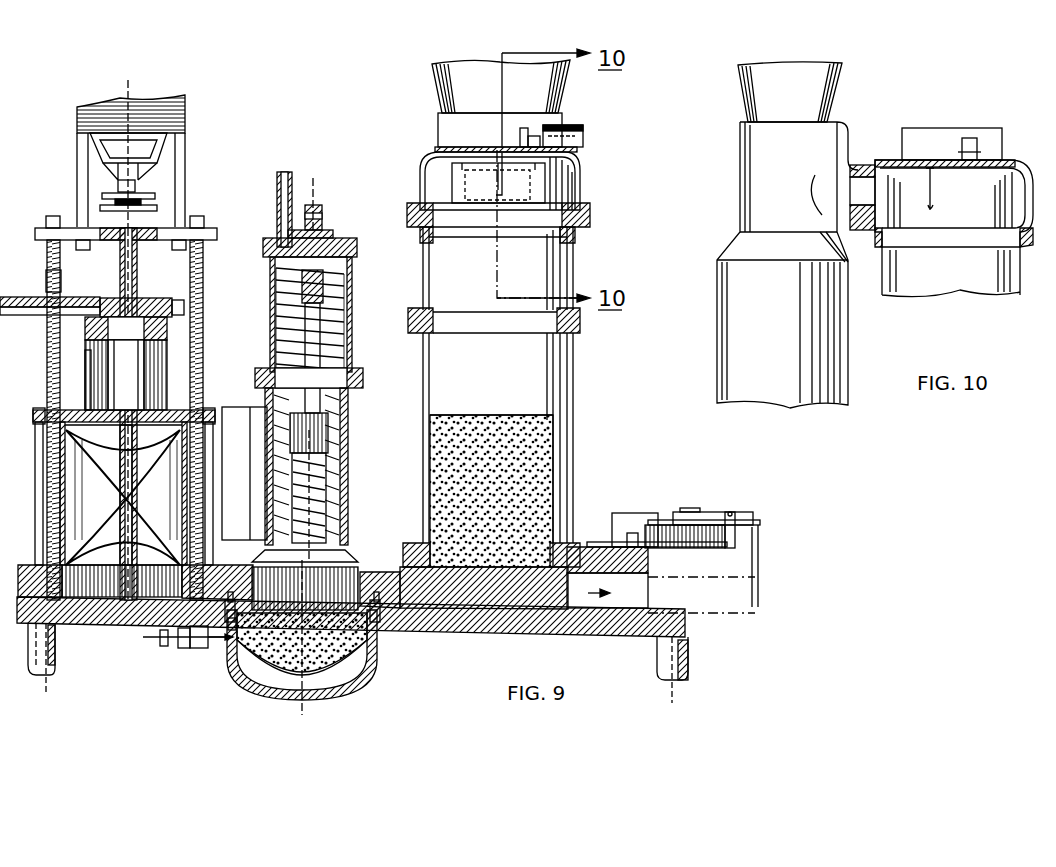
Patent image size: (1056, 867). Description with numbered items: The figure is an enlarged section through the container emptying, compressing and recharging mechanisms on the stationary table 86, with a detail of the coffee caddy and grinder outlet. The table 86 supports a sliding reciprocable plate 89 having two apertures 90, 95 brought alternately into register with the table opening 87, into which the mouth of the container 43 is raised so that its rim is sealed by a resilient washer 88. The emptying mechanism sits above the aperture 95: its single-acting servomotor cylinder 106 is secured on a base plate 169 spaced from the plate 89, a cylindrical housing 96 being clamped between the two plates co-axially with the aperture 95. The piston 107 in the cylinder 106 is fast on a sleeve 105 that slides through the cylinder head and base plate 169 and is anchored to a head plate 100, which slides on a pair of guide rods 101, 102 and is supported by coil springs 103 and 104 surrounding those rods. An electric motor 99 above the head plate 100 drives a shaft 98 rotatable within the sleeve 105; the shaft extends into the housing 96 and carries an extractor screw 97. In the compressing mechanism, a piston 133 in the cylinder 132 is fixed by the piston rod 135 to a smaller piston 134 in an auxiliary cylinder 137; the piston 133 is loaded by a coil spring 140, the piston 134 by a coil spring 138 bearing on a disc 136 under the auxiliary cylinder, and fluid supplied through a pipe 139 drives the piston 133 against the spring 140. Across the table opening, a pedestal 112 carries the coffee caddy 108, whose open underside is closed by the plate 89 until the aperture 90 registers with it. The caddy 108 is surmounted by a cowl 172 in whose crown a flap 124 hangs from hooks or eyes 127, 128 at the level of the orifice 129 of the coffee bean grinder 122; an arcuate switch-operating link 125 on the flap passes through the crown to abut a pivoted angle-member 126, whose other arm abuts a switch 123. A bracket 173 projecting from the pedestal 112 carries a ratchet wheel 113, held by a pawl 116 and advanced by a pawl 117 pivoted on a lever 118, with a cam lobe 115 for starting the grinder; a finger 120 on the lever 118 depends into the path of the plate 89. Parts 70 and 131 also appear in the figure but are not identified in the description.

In FIG. 9, the electric motor 99 is at (185, 108).
In FIG. 9, the head plate 100 is at (42, 228).
In FIG. 9, the guide rod 101 is at (47, 256).
In FIG. 9, the guide rod 102 is at (204, 270).
In FIG. 9, the coil spring 103 is at (62, 282).
In FIG. 9, the sleeve 105 is at (138, 280).
In FIG. 9, the support arm 70 is at (12, 297).
In FIG. 9, the coil spring 104 is at (204, 312).
In FIG. 9, the piston 107 is at (167, 333).
In FIG. 9, the single-acting servomotor cylinder 106 is at (167, 362).
In FIG. 9, the shaft 98 is at (85, 365).
In FIG. 9, the base plate 169 is at (35, 411).
In FIG. 9, the cylindrical housing 96 is at (62, 460).
In FIG. 9, the extractor screw 97 is at (145, 565).
In FIG. 9, the aperture 95 is at (80, 600).
In FIG. 9, the stationary table 86 is at (455, 625).
In FIG. 9, the sliding reciprocable plate 89 is at (533, 600).
In FIG. 9, the resilient washer 88 is at (232, 625).
In FIG. 9, the coil spring 138 is at (268, 425).
In FIG. 9, the pipe 139 is at (282, 172).
In FIG. 9, the piston 133 is at (276, 247).
In FIG. 9, the cylinder 132 is at (353, 315).
In FIG. 9, the coil spring 140 is at (278, 296).
In FIG. 9, the piston rod 135 is at (352, 363).
In FIG. 9, the smaller piston 134 is at (350, 425).
In FIG. 9, the outer spring 131 is at (350, 480).
In FIG. 9, the auxiliary cylinder 137 is at (348, 495).
In FIG. 9, the disc 136 is at (345, 553).
In FIG. 9, the aperture 90 is at (300, 655).
In FIG. 9, the container 43 is at (352, 696).
In FIG. 9, the table opening 87 is at (385, 625).
In FIG. 9, the pivoted angle-member 126 is at (500, 140).
In FIG. 10, the pivoted angle-member 126 is at (972, 138).
In FIG. 9, the switch 123 is at (568, 118).
In FIG. 9, the hook or eye 127 is at (435, 149).
In FIG. 9, the hook or eye 128 is at (580, 160).
In FIG. 9, the flap 124 is at (452, 178).
In FIG. 10, the flap 124 is at (925, 185).
In FIG. 9, the arcuate switch-operating link 125 is at (500, 190).
In FIG. 10, the arcuate switch-operating link 125 is at (930, 180).
In FIG. 9, the cowl 172 is at (585, 186).
In FIG. 9, the coffee caddy 108 is at (530, 552).
In FIG. 10, the coffee caddy 108 is at (945, 280).
In FIG. 9, the bracket 173 is at (592, 542).
In FIG. 9, the pedestal 112 is at (645, 568).
In FIG. 9, the finger 120 is at (758, 585).
In FIG. 9, the pawl 117 is at (730, 535).
In FIG. 9, the ratchet wheel 113 is at (655, 525).
In FIG. 9, the cam lobe 115 is at (700, 512).
In FIG. 9, the lever 118 is at (732, 512).
In FIG. 9, the pawl 116 is at (630, 533).
In FIG. 10, the coffee bean grinder 122 is at (792, 160).
In FIG. 10, the orifice 129 is at (860, 180).